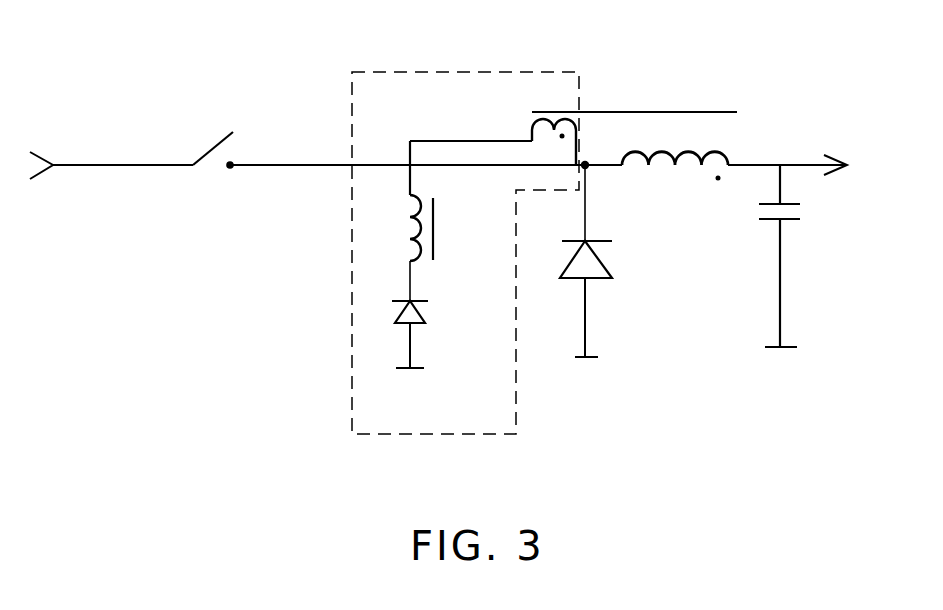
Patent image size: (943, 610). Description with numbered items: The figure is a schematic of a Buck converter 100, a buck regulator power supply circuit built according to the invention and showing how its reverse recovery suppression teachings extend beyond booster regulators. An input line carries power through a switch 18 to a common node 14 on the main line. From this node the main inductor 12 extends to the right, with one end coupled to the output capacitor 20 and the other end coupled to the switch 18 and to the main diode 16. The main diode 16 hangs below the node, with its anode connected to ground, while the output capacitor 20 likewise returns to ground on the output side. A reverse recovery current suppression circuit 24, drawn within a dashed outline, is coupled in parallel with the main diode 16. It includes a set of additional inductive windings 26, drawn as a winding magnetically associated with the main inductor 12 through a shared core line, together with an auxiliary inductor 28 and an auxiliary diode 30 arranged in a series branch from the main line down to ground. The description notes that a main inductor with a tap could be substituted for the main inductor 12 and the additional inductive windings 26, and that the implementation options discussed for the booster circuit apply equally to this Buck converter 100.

The Buck converter 100 is at (327, 442).
The switch 18 is at (210, 158).
The reverse recovery current suppression circuit 24 is at (344, 114).
The additional inductive windings 26 is at (530, 118).
The node 14 is at (588, 160).
The main diode 16 is at (590, 281).
The main inductor 12 is at (694, 151).
The output capacitor 20 is at (768, 219).
The auxiliary inductor 28 is at (407, 240).
The auxiliary diode 30 is at (422, 327).